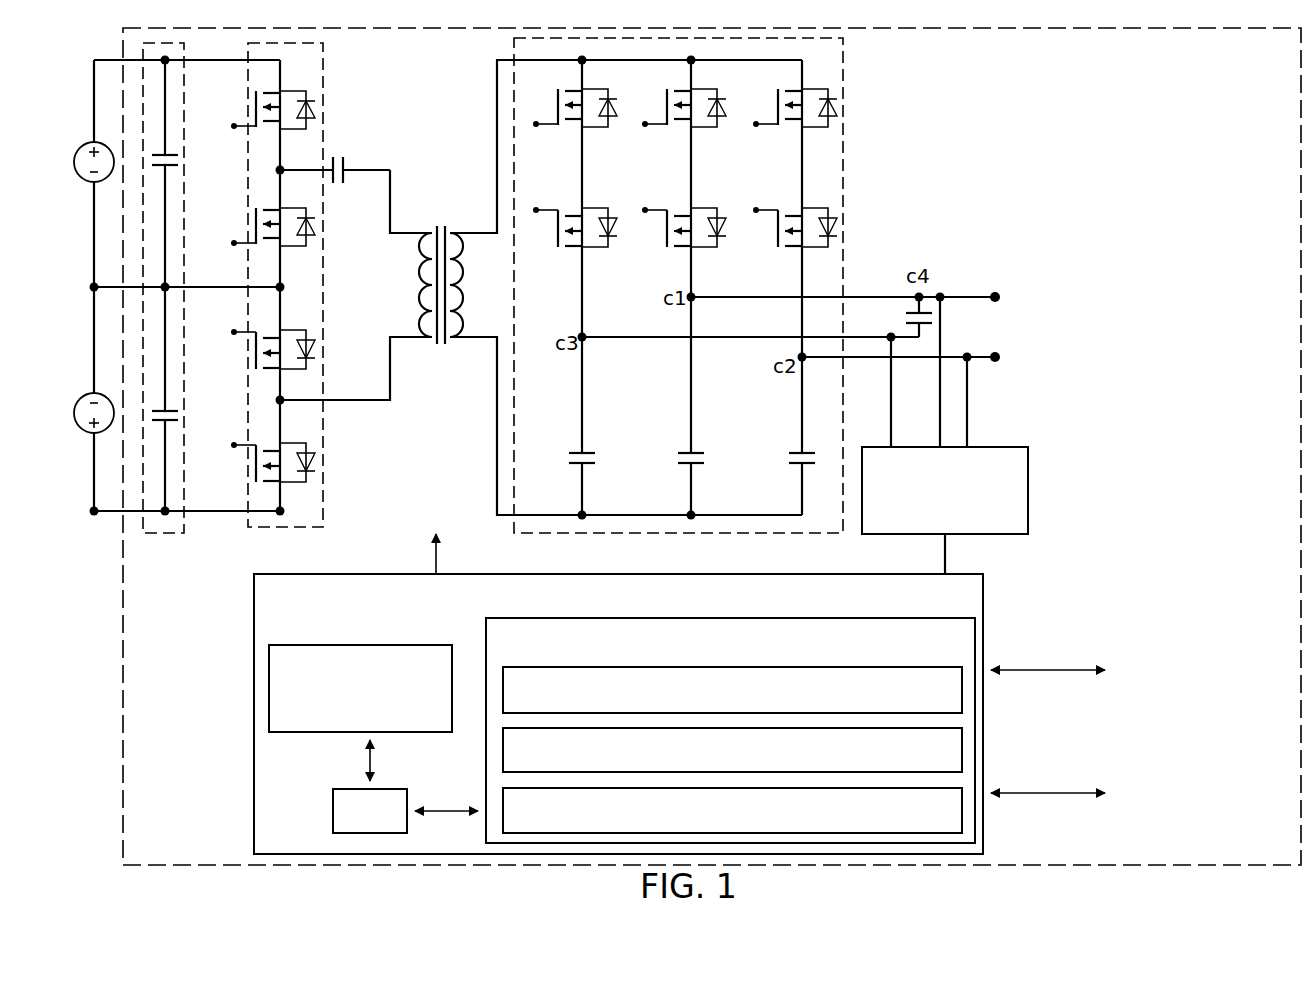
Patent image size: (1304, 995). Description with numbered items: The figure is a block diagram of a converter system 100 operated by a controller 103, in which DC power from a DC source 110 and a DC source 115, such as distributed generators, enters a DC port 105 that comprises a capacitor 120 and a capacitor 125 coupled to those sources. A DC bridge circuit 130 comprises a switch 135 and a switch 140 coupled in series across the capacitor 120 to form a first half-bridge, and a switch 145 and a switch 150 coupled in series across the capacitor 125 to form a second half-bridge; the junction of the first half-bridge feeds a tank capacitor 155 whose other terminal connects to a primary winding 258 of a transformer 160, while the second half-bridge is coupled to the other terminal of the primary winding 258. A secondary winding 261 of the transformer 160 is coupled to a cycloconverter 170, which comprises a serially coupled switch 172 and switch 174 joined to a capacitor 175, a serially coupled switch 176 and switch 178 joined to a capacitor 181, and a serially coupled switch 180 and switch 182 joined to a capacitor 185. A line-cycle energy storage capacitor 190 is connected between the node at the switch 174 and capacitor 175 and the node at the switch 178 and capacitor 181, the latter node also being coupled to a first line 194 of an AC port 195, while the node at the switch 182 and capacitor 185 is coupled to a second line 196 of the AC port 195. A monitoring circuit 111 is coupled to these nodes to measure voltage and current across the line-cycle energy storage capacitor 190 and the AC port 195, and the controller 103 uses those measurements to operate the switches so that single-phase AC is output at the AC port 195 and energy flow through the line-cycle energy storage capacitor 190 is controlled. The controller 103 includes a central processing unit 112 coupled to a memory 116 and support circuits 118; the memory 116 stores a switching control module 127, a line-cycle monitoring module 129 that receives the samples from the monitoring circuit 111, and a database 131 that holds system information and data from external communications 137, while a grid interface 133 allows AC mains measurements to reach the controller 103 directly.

The converter system 100 is at (123, 657).
The controller 103 is at (983, 583).
The DC port 105 is at (167, 533).
The DC source 110 is at (76, 160).
The monitoring circuit 111 is at (1028, 480).
The central processing unit 112 is at (333, 811).
The DC source 115 is at (76, 410).
The memory 116 is at (983, 640).
The support circuits 118 is at (269, 688).
The capacitor 120 is at (178, 165).
The capacitor 125 is at (176, 412).
The switching control module 127 is at (962, 690).
The line-cycle monitoring module 129 is at (962, 750).
The DC bridge circuit 130 is at (323, 47).
The database 131 is at (962, 812).
The grid interface 133 is at (1142, 595).
The switch 135 is at (310, 90).
The external communications 137 is at (1160, 718).
The switch 140 is at (318, 220).
The switch 145 is at (318, 350).
The switch 150 is at (308, 447).
The tank capacitor 155 is at (340, 152).
The transformer 160 is at (541, 287).
The cycloconverter 170 is at (843, 52).
The switch 172 is at (577, 122).
The switch 174 is at (594, 190).
The capacitor 175 is at (592, 466).
The switch 176 is at (700, 125).
The switch 178 is at (702, 207).
The switch 180 is at (830, 92).
The capacitor 181 is at (697, 452).
The switch 182 is at (830, 232).
The capacitor 185 is at (793, 466).
The line-cycle energy storage capacitor 190 is at (928, 325).
The first line 194 is at (985, 297).
The AC port 195 is at (987, 332).
The second line 196 is at (985, 365).
The primary winding 258 is at (417, 265).
The secondary winding 261 is at (467, 267).